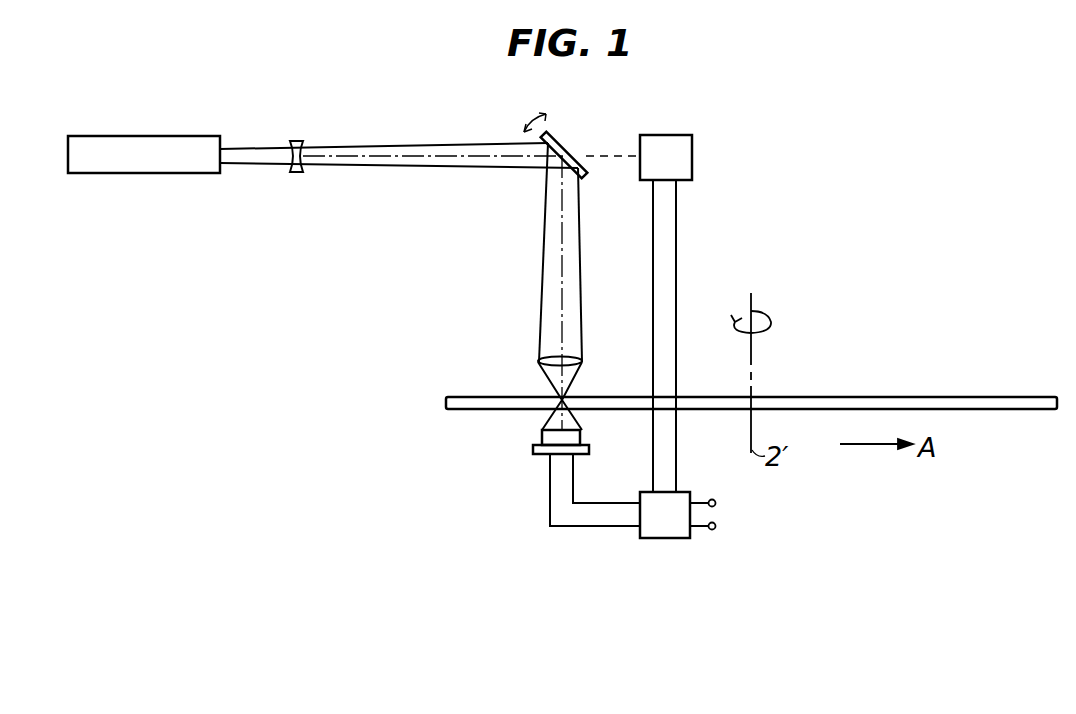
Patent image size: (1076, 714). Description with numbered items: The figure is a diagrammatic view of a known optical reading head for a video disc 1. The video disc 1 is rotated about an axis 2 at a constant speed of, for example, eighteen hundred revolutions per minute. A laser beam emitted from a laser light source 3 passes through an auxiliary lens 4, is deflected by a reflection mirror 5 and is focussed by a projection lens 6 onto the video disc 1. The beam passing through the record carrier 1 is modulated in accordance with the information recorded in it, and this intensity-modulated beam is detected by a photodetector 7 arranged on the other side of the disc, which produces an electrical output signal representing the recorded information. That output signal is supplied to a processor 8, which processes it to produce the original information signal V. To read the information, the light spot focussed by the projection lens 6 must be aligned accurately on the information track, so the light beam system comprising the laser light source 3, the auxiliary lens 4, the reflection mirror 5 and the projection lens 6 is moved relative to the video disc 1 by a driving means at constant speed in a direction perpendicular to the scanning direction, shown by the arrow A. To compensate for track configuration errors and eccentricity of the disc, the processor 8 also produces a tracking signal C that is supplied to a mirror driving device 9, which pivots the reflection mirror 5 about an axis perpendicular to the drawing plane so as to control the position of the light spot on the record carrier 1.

The video disc 1 is at (900, 397).
The axis 2 is at (760, 307).
The laser light source 3 is at (170, 142).
The auxiliary lens 4 is at (296, 138).
The reflection mirror 5 is at (569, 136).
The projection lens 6 is at (580, 356).
The photodetector 7 is at (582, 437).
The processor 8 is at (666, 540).
The mirror driving device 9 is at (668, 137).